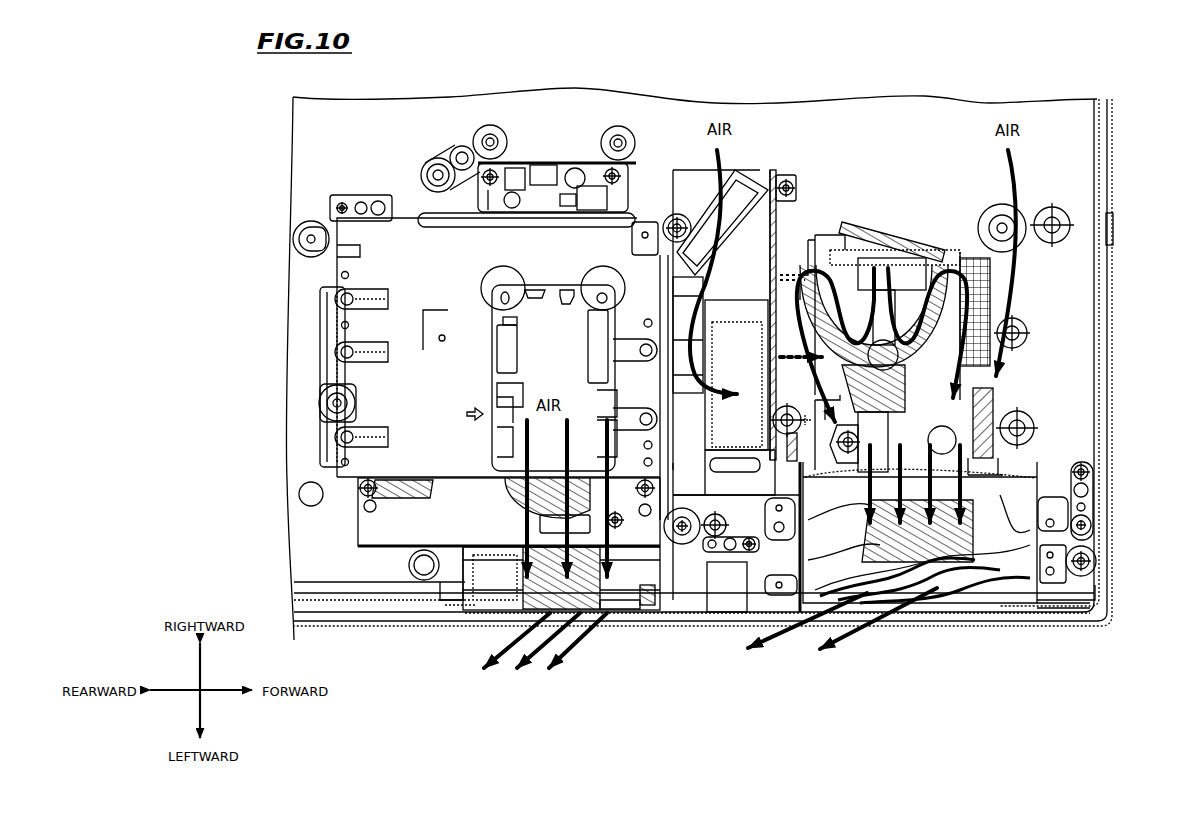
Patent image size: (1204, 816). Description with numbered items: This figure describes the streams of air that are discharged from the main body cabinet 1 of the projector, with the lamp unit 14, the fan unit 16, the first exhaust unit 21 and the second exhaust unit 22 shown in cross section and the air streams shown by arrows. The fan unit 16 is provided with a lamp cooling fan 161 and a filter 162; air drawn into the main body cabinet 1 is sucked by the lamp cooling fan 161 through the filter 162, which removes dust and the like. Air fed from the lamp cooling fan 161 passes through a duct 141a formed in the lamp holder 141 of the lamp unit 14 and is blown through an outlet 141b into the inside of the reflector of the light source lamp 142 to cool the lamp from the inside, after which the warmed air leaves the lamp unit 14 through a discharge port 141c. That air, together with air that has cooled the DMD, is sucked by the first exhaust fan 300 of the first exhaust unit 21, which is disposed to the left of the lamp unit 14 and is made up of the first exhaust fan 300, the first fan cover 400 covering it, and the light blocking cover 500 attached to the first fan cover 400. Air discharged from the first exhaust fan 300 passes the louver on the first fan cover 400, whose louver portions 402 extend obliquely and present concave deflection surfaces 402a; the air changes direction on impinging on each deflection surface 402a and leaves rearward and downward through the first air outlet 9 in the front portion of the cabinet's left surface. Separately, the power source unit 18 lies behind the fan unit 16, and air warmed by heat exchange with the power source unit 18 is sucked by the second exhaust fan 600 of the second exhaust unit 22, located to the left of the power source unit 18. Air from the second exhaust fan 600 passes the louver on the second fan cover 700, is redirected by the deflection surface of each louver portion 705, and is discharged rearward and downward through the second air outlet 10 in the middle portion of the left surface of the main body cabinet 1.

The main body cabinet 1 is at (1112, 385).
The first air outlet 9 is at (920, 576).
The second air outlet 10 is at (500, 628).
The lamp unit 14 is at (923, 303).
The fan unit 16 is at (690, 170).
The power source unit 18 is at (415, 245).
The first exhaust unit 21 is at (1015, 622).
The second exhaust unit 22 is at (476, 613).
The lamp holder 141 is at (940, 238).
The duct 141a is at (768, 373).
The outlet 141b is at (880, 265).
The discharge port 141c is at (798, 248).
The light source lamp 142 is at (1000, 380).
The lamp cooling fan 161 is at (718, 330).
The filter 162 is at (707, 235).
The first exhaust fan 300 is at (1018, 478).
The first fan cover 400 is at (1040, 500).
The louver portion 402 is at (1003, 598).
The deflection surface 402a is at (975, 560).
The light blocking cover 500 is at (1060, 573).
The second exhaust fan 600 is at (470, 572).
The second fan cover 700 is at (660, 615).
The louver portion 705 is at (622, 618).